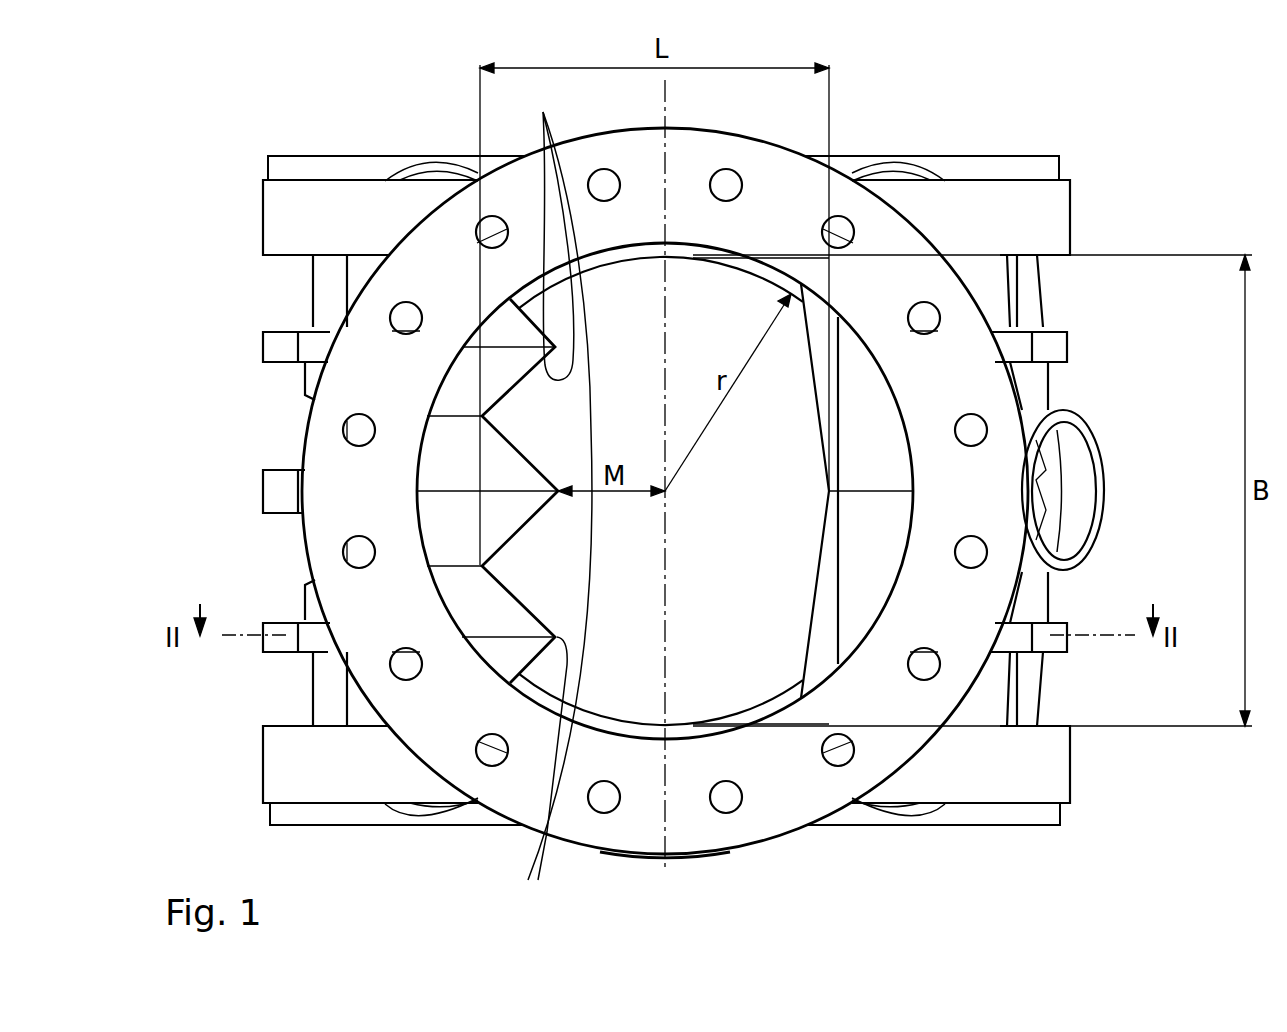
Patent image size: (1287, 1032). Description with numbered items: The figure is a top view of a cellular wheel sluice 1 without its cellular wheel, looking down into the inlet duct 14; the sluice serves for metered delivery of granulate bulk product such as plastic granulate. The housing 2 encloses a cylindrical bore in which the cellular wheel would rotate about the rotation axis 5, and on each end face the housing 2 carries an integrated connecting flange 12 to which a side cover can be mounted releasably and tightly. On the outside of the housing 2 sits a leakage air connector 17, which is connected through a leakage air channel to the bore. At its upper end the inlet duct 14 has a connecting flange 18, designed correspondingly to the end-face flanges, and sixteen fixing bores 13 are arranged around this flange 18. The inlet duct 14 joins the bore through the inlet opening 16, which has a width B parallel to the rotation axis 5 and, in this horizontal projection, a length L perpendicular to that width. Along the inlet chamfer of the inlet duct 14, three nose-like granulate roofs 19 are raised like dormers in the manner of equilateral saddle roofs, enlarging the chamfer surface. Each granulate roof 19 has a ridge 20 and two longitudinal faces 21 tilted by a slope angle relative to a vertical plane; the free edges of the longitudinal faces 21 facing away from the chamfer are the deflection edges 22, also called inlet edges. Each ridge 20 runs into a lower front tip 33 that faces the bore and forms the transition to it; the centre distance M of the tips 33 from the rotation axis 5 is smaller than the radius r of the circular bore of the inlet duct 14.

The cellular wheel sluice 1 is at (947, 100).
The housing 2 is at (997, 172).
The rotation axis 5 is at (665, 790).
The connecting flange 12 is at (899, 156).
The fixing bores 13 is at (604, 799).
The inlet duct 14 is at (685, 705).
The inlet opening 16 is at (750, 620).
The leakage air connector 17 is at (1085, 488).
The connecting flange 18 is at (760, 788).
The granulate roofs 19 is at (537, 357).
The ridge 20 is at (447, 465).
The longitudinal faces 21 is at (527, 490).
The deflection edges 22 is at (560, 479).
The front tip 33 is at (538, 774).